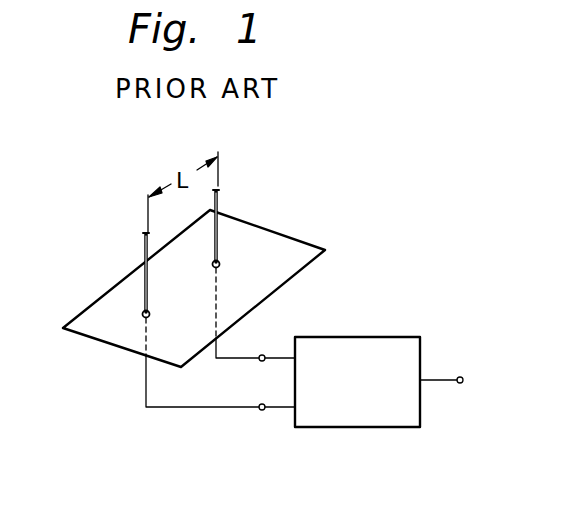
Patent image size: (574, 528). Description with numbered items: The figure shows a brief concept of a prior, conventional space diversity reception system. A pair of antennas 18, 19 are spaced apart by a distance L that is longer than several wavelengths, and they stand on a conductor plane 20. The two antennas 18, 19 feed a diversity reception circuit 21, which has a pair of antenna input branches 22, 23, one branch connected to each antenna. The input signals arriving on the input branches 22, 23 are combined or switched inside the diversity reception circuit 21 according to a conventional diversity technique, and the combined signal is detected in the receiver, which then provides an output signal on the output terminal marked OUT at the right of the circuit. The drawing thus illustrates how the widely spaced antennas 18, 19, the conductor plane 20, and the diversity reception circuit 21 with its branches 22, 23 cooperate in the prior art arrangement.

The antenna 18 is at (220, 191).
The antenna 19 is at (143, 249).
The conductor plane 20 is at (290, 245).
The diversity reception circuit 21 is at (386, 336).
The antenna input branch 22 is at (263, 351).
The antenna input branch 23 is at (262, 411).